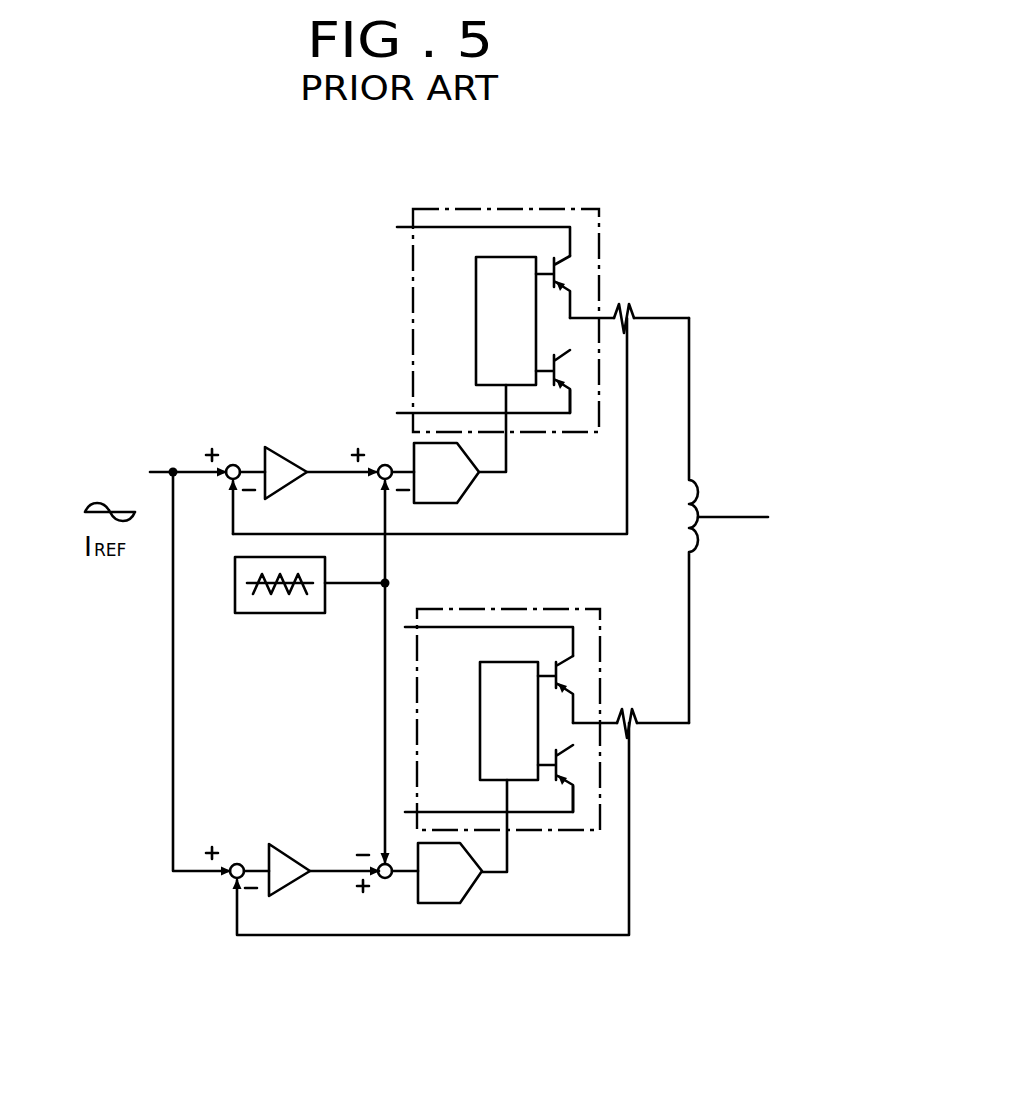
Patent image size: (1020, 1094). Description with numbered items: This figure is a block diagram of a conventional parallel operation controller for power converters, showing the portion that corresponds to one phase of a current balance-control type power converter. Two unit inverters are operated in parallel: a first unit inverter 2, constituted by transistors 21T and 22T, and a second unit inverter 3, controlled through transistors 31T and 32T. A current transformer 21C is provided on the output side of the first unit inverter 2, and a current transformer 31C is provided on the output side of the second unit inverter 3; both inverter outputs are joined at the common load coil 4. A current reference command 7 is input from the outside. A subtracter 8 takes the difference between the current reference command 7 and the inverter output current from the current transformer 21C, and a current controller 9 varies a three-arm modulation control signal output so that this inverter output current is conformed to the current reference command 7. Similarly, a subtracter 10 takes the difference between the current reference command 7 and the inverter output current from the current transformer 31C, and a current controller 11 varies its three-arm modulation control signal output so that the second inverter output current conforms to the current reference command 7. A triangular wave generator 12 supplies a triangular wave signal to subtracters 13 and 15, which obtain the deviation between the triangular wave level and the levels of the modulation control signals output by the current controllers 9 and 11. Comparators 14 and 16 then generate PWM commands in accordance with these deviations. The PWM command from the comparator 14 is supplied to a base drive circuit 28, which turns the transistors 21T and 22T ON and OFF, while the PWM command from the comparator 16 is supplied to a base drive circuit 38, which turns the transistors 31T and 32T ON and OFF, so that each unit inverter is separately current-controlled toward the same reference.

The first unit inverter 2 is at (600, 209).
The second unit inverter 3 is at (648, 598).
The load coil 4 is at (698, 485).
The current reference command 7 is at (155, 470).
The subtracter 8 is at (231, 465).
The current controller 9 is at (291, 453).
The subtracter 10 is at (238, 863).
The current controller 11 is at (292, 848).
The triangular wave generator 12 is at (235, 584).
The subtracter 13 is at (385, 465).
The comparator 14 is at (437, 506).
The subtracter 15 is at (388, 879).
The comparator 16 is at (449, 905).
The transistor 21T is at (560, 269).
The current transformer 21C is at (630, 317).
The transistor 22T is at (567, 397).
The base drive circuit 28 is at (476, 307).
The transistor 31T is at (567, 672).
The current transformer 31C is at (634, 732).
The transistor 32T is at (568, 770).
The base drive circuit 38 is at (480, 688).